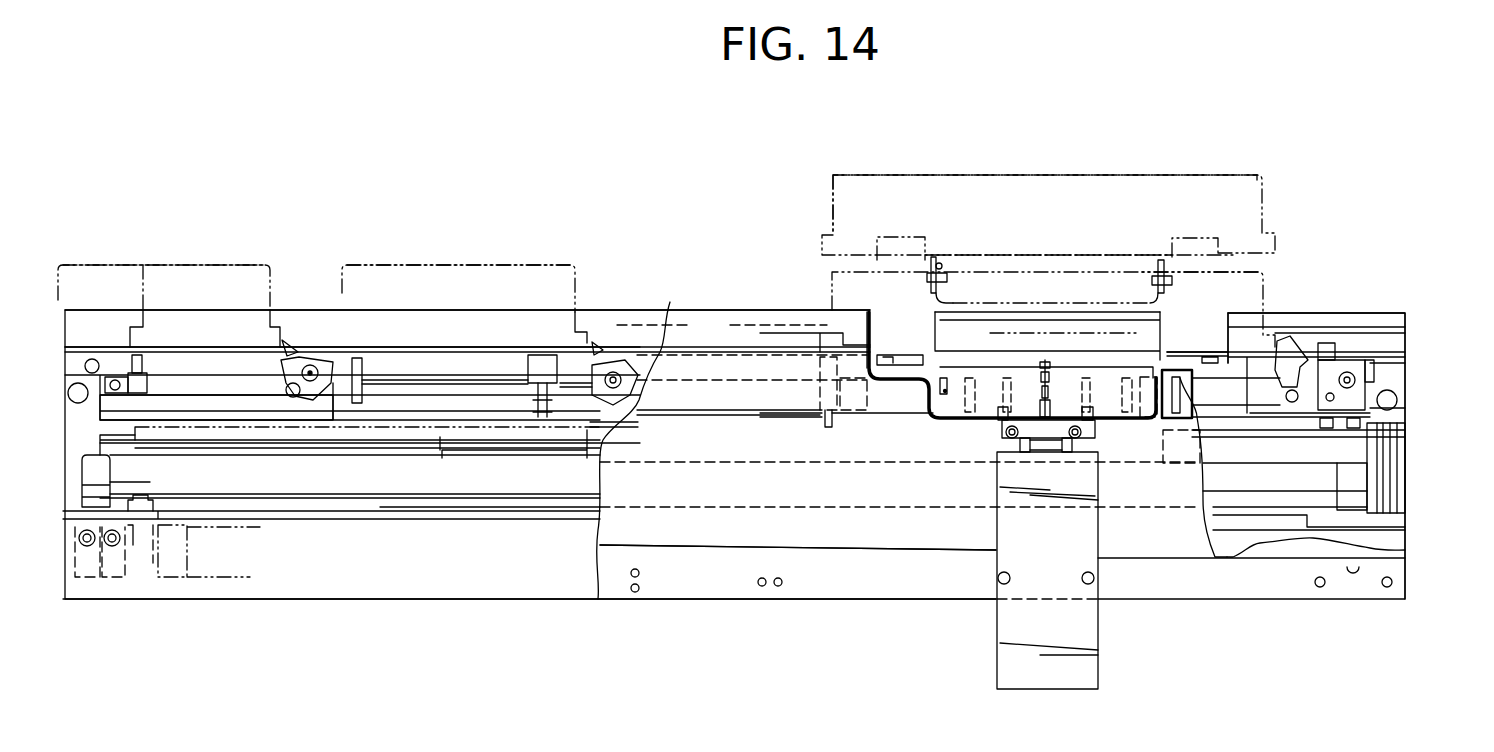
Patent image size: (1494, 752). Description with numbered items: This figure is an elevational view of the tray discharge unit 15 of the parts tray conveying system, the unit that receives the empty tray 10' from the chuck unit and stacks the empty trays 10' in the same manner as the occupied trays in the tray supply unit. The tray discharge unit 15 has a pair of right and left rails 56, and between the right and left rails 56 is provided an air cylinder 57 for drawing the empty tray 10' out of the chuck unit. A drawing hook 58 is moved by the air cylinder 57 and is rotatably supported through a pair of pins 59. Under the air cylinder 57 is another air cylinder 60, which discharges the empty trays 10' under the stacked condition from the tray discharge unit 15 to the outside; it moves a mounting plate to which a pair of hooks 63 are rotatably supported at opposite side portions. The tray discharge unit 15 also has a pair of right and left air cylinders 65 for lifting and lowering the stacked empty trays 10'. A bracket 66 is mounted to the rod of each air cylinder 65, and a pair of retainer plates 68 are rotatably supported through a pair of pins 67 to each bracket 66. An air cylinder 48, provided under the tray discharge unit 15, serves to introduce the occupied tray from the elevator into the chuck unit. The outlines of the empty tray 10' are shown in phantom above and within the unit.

The empty tray 10' is at (708, 198).
The tray discharge unit 15 is at (1140, 153).
The air cylinder 48 is at (210, 578).
The rails 56 is at (736, 352).
The air cylinder 57 is at (407, 437).
The drawing hook 58 is at (1329, 429).
The pins 59 is at (1317, 355).
The air cylinder 60 is at (500, 492).
The hooks 63 is at (287, 338).
The air cylinders 65 is at (1085, 645).
The bracket 66 is at (1020, 303).
The pins 67 is at (927, 278).
The retainer plates 68 is at (1103, 250).